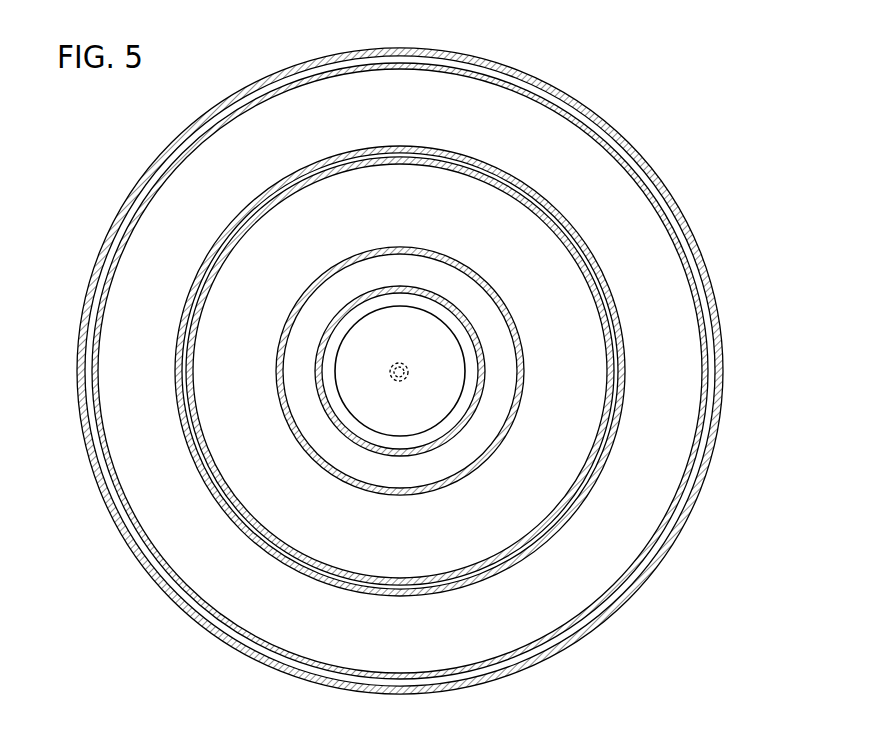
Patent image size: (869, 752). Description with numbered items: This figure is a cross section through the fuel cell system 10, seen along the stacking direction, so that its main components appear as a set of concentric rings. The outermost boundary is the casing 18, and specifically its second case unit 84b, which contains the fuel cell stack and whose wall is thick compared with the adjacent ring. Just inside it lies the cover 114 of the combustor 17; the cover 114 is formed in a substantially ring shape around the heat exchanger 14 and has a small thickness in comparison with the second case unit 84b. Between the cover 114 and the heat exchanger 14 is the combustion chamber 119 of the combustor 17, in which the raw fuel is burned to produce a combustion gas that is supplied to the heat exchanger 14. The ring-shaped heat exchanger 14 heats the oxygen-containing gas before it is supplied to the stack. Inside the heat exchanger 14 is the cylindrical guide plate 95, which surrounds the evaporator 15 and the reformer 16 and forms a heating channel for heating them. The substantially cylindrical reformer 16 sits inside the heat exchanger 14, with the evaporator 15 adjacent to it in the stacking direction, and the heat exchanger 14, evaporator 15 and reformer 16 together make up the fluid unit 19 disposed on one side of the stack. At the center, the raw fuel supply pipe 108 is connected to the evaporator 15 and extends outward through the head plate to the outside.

The fuel cell system 10 is at (133, 126).
The heat exchanger 14 is at (613, 362).
The evaporator 15 is at (400, 371).
The reformer 16 is at (438, 387).
The combustor 17 is at (529, 86).
The casing 18 is at (664, 560).
The fluid unit 19 is at (812, 363).
The second case unit 84b is at (553, 655).
The guide plate 95 is at (477, 323).
The raw fuel supply pipe 108 is at (402, 382).
The cover 114 is at (602, 136).
The combustion chamber 119 is at (125, 470).